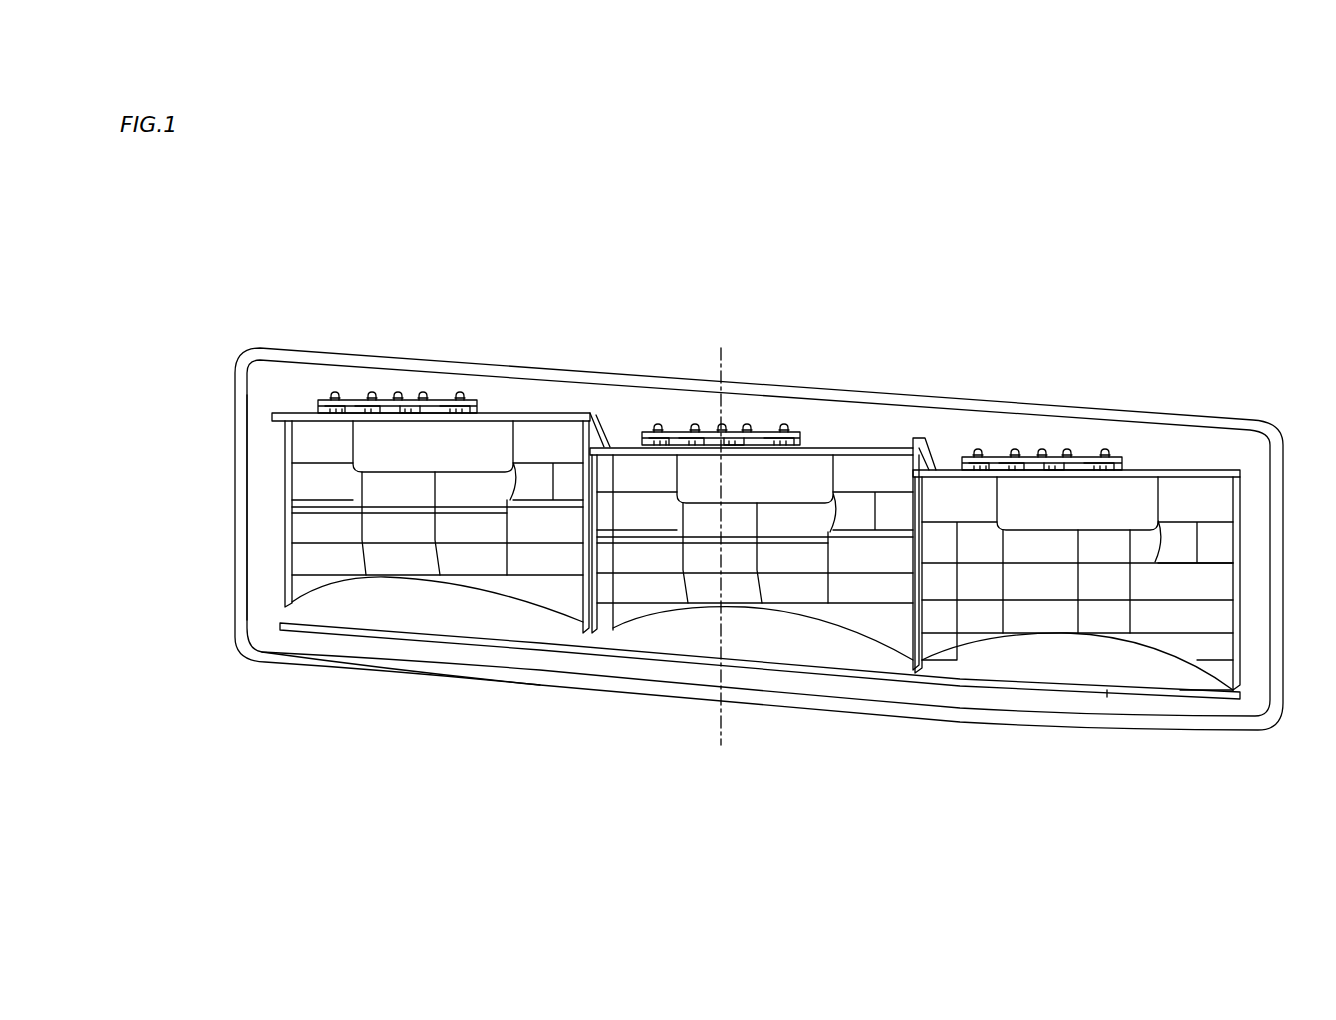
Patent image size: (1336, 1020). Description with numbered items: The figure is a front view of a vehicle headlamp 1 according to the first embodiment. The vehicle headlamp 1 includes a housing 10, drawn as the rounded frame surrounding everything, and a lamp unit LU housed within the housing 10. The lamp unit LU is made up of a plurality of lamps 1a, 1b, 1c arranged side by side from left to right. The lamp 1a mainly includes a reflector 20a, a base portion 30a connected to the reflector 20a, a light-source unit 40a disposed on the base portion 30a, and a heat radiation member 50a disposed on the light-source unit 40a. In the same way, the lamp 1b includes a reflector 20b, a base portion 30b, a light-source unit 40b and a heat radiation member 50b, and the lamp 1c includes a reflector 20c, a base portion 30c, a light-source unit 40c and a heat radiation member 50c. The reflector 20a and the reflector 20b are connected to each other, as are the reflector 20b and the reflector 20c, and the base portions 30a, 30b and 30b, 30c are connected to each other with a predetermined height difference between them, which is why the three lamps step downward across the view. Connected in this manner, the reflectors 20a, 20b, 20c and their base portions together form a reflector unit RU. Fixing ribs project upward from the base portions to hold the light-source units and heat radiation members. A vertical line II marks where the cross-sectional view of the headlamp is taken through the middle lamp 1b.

The vehicle headlamp 1 is at (1012, 274).
The lamp 1a is at (541, 394).
The lamp 1b is at (858, 424).
The lamp 1c is at (1165, 446).
The housing 10 is at (1252, 424).
The reflector 20a is at (393, 565).
The reflector 20b is at (710, 598).
The reflector 20c is at (1048, 620).
The base portion 30a is at (292, 417).
The base portion 30b is at (613, 447).
The base portion 30c is at (940, 473).
The light-source unit 40a is at (396, 407).
The light-source unit 40b is at (738, 437).
The light-source unit 40c is at (1040, 460).
The heat radiation member 50a is at (455, 406).
The heat radiation member 50b is at (761, 440).
The heat radiation member 50c is at (1100, 462).
The lamp unit LU is at (260, 386).
The reflector unit RU is at (274, 594).
The section line II- II is at (722, 545).